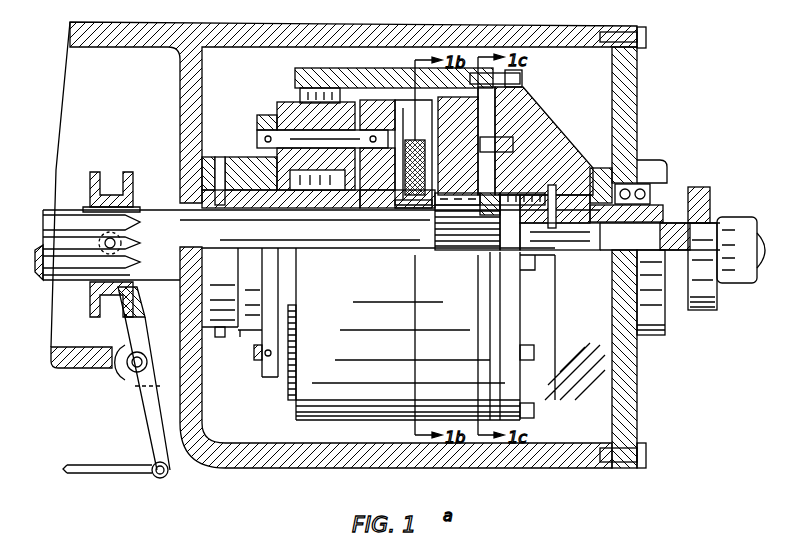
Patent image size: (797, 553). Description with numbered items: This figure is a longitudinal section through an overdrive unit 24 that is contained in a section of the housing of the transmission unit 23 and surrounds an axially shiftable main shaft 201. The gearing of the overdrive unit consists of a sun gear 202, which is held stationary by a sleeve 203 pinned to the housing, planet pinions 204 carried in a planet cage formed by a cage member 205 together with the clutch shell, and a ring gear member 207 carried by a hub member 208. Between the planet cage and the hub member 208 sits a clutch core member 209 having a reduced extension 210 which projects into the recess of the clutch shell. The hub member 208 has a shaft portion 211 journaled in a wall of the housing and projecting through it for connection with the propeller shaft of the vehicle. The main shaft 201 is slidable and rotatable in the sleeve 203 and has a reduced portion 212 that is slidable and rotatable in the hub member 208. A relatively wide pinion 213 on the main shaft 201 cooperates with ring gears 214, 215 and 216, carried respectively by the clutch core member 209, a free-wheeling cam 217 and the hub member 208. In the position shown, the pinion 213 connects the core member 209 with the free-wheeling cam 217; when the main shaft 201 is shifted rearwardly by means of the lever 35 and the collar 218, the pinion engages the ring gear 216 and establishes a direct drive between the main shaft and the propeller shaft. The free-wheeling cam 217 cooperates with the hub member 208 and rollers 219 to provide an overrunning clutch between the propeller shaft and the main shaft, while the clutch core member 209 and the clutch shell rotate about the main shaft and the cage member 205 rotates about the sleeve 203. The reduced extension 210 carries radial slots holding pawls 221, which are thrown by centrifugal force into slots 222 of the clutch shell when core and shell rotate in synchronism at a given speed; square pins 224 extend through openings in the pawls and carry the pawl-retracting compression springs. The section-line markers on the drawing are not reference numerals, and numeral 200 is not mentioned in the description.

The transmission unit 23 is at (141, 31).
The overdrive unit 24 is at (530, 31).
The lever 35 is at (146, 401).
The clutch housing block 200 is at (360, 112).
The main shaft 201 is at (152, 210).
The sun gear 202 is at (347, 206).
The sleeve 203 is at (233, 238).
The planet pinions 204 is at (287, 112).
The cage member 205 is at (262, 121).
The ring gear member 207 is at (298, 90).
The hub member 208 is at (508, 124).
The clutch core member 209 is at (440, 112).
The reduced extension 210 is at (384, 211).
The shaft portion 211 is at (603, 294).
The reduced portion 212 is at (568, 244).
The pinion 213 is at (453, 247).
The ring gear 214 is at (435, 208).
The ring gear 215 is at (510, 193).
The ring gear 216 is at (556, 192).
The free-wheeling cam 217 is at (545, 160).
The collar 218 is at (97, 178).
The rollers 219 is at (513, 108).
The pawls 221 is at (425, 127).
The slots 222 is at (415, 140).
The square pins 224 is at (402, 207).